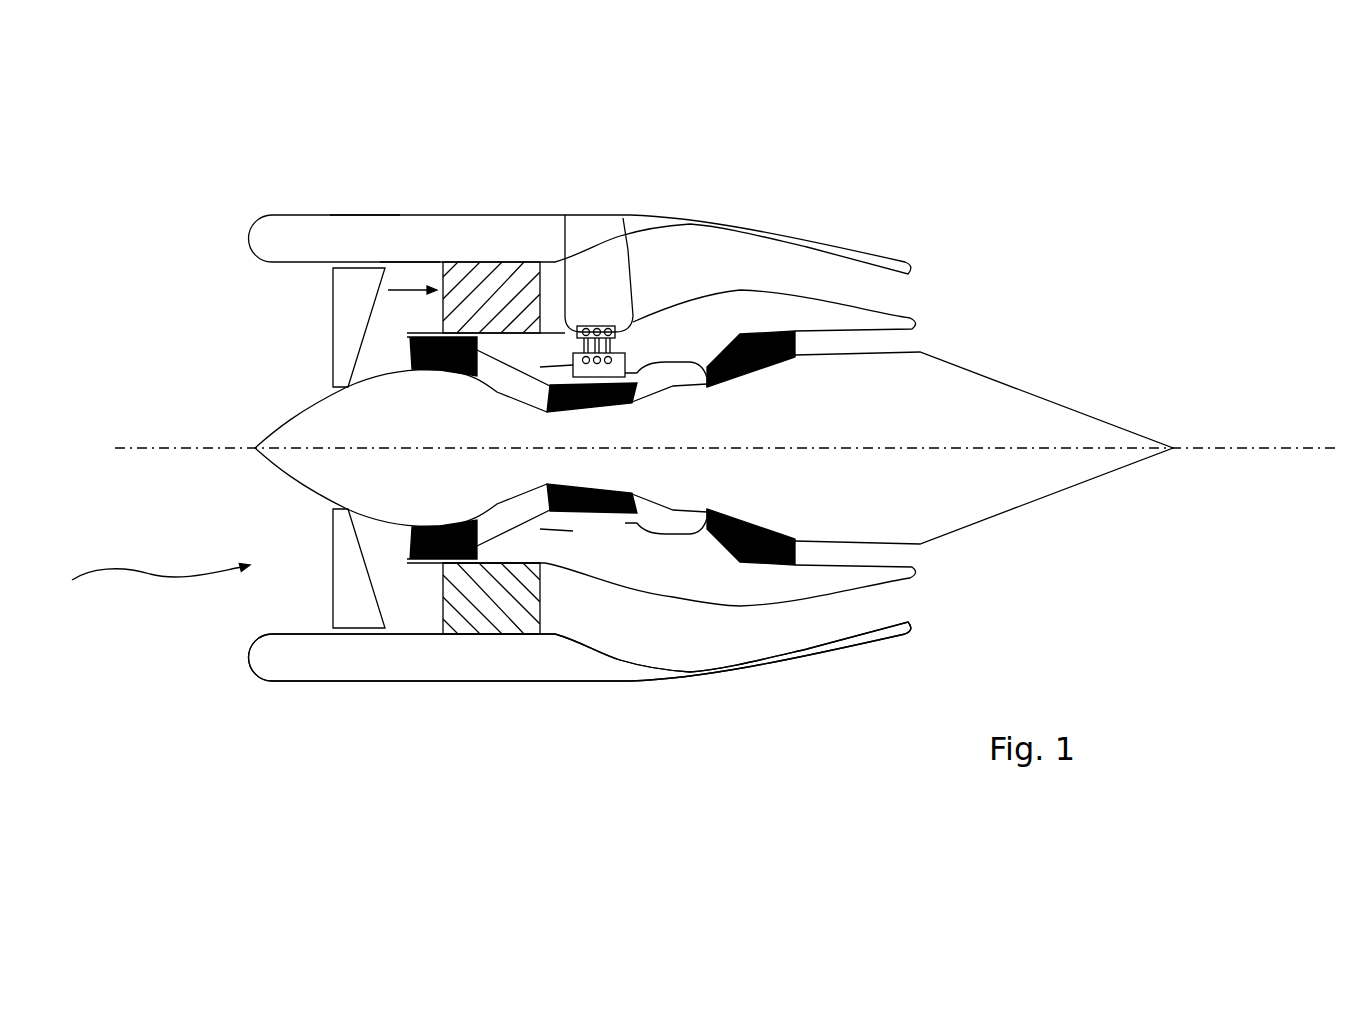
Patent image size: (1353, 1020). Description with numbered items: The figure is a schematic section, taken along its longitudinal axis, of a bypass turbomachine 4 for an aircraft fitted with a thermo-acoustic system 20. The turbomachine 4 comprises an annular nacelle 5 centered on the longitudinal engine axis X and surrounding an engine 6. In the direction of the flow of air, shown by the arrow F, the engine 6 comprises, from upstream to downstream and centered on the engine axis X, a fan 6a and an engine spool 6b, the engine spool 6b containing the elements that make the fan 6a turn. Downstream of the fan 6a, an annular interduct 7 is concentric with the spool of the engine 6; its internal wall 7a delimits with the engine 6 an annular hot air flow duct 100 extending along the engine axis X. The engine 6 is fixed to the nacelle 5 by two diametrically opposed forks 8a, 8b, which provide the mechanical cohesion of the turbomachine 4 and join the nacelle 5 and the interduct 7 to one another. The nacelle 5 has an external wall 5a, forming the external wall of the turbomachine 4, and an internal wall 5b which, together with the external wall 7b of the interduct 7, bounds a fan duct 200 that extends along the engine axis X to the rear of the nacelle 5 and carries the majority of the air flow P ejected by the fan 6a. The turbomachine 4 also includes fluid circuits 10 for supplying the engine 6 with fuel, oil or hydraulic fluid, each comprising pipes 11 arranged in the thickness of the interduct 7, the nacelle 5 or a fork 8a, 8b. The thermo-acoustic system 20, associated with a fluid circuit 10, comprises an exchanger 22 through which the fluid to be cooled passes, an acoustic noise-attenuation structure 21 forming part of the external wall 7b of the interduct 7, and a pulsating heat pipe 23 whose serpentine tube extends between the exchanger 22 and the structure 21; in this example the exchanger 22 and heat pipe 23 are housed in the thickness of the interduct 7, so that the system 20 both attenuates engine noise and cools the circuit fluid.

The bypass turbomachine 4 is at (289, 725).
The annular nacelle 5 is at (318, 243).
The external wall of the nacelle 5a is at (360, 217).
The internal wall of the nacelle 5b is at (410, 252).
The engine 6 is at (760, 507).
The fan 6a is at (352, 315).
The engine spool 6b is at (675, 473).
The annular interduct 7 is at (748, 300).
The internal wall of the interduct 7a is at (505, 565).
The external wall of the interduct 7b is at (790, 300).
The fork 8a is at (443, 318).
The fork 8b is at (443, 614).
The fluid circuit 10 is at (663, 345).
The pipes 11 is at (489, 262).
The thermo-acoustic system 20 is at (603, 290).
The acoustic noise-attenuation structure 21 is at (623, 216).
The exchanger 22 is at (572, 376).
The pulsating heat pipe 23 is at (572, 320).
The hot air flow duct 100 is at (489, 535).
The fan duct 200 is at (711, 248).
The air flow ejected by the fan P is at (418, 287).
The flow of air F is at (160, 572).
The longitudinal axis X is at (1260, 447).